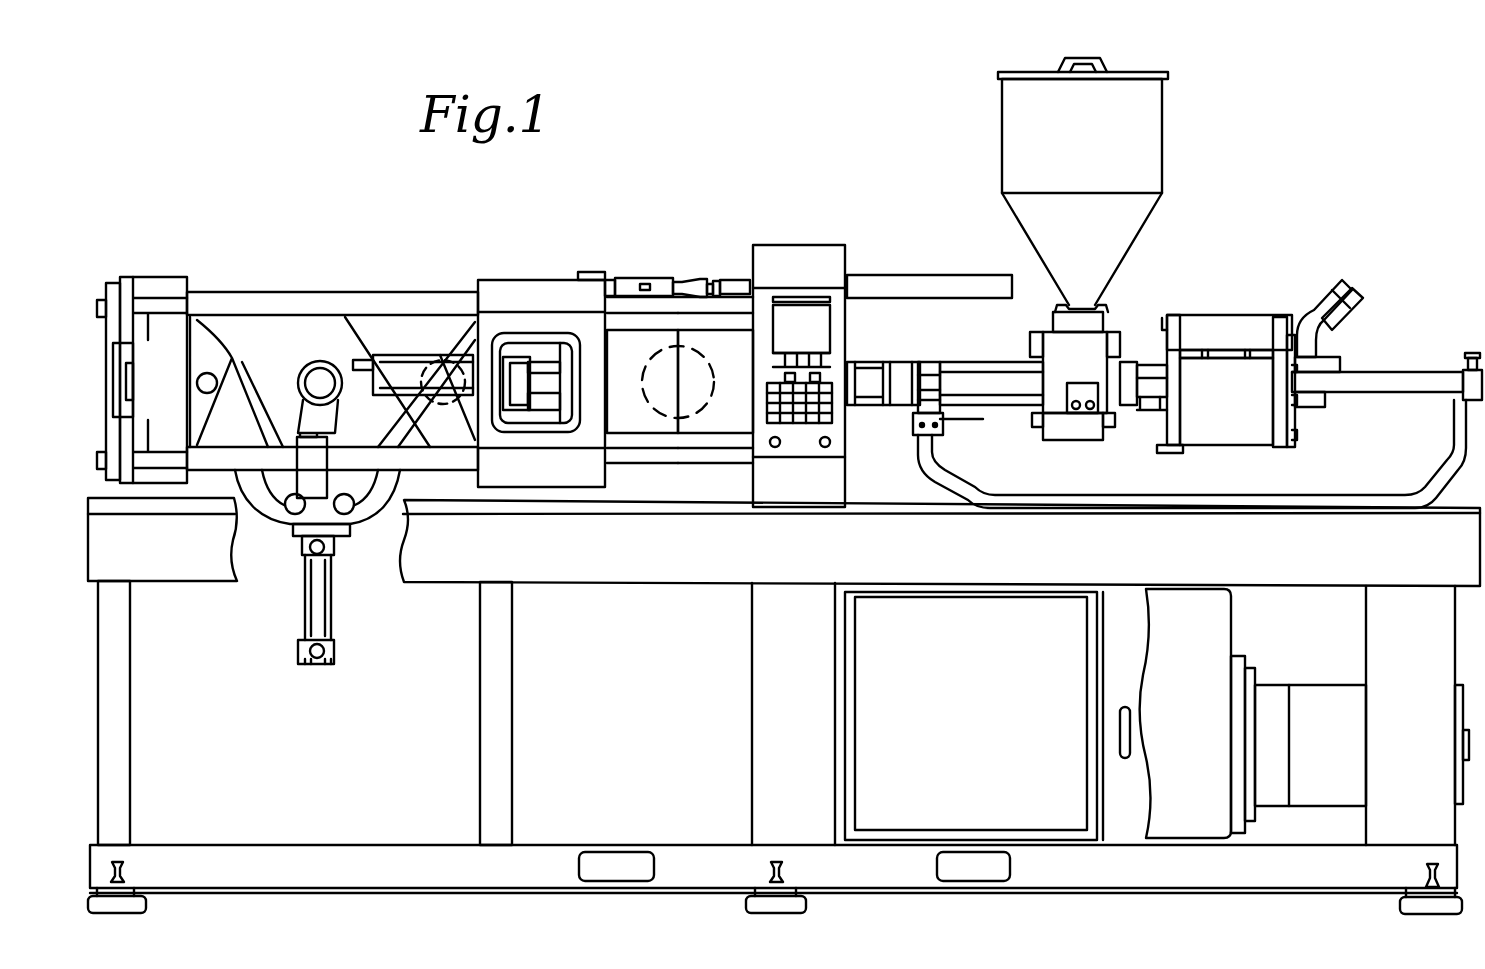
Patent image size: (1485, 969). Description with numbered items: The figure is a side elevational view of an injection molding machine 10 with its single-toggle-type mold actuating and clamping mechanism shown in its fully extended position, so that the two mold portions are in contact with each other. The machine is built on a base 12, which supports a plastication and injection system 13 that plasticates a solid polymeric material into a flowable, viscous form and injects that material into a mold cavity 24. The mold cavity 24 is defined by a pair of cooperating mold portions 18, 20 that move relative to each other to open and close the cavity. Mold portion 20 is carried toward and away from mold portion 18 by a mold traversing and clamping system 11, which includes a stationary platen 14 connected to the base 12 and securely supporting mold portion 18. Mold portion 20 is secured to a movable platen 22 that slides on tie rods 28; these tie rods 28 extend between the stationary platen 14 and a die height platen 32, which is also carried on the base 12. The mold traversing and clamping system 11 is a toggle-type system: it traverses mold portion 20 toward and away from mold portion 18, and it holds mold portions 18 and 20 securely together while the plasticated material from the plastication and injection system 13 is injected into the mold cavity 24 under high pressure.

The injection molding machine 10 is at (720, 128).
The mold traversing and clamping system 11 is at (285, 180).
The base 12 is at (1437, 569).
The plastication and injection system 13 is at (1270, 243).
The stationary platen 14 is at (795, 268).
The mold portion 18 is at (731, 425).
The mold portion 20 is at (652, 425).
The movable platen 22 is at (520, 285).
The mold cavity 24 is at (655, 355).
The tie rods 28 is at (318, 300).
The die height platen 32 is at (165, 287).